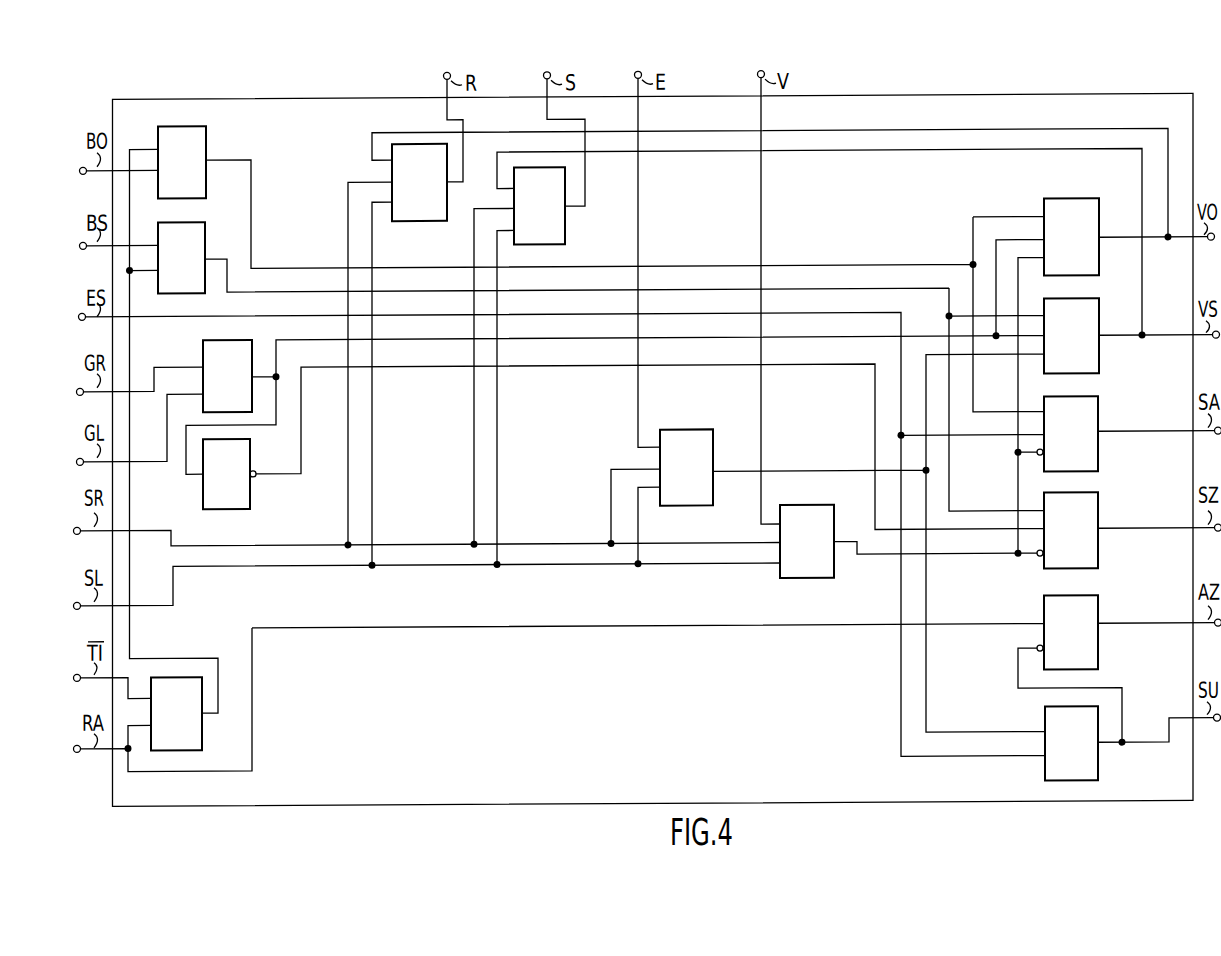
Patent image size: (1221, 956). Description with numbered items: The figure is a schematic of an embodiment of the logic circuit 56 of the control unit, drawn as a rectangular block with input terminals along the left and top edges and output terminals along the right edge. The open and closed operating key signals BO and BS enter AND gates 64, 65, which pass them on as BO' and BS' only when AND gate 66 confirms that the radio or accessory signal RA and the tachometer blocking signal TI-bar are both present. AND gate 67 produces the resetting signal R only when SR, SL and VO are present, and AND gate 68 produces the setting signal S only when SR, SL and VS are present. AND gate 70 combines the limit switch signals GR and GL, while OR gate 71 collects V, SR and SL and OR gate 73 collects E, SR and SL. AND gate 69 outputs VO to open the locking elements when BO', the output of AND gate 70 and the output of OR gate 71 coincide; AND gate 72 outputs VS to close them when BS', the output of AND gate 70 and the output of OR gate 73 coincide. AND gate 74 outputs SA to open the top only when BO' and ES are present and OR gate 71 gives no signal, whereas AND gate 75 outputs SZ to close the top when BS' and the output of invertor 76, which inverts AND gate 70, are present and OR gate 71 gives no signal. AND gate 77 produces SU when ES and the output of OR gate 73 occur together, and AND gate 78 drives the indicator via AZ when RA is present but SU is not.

The logic circuit 56 is at (900, 97).
The AND gate 64 is at (167, 124).
The AND gate 65 is at (200, 220).
The AND gate 66 is at (202, 727).
The AND gate 67 is at (447, 190).
The AND gate 68 is at (565, 225).
The AND gate 69 is at (1063, 201).
The AND gate 70 is at (203, 340).
The OR gate 71 is at (806, 506).
The AND gate 72 is at (1099, 302).
The OR gate 73 is at (705, 430).
The AND gate 74 is at (1107, 383).
The AND gate 75 is at (1107, 478).
The invertor 76 is at (250, 448).
The AND gate 77 is at (1098, 771).
The AND gate 78 is at (1102, 581).